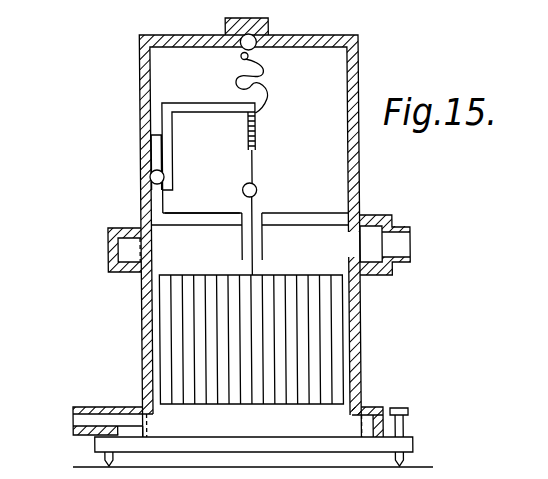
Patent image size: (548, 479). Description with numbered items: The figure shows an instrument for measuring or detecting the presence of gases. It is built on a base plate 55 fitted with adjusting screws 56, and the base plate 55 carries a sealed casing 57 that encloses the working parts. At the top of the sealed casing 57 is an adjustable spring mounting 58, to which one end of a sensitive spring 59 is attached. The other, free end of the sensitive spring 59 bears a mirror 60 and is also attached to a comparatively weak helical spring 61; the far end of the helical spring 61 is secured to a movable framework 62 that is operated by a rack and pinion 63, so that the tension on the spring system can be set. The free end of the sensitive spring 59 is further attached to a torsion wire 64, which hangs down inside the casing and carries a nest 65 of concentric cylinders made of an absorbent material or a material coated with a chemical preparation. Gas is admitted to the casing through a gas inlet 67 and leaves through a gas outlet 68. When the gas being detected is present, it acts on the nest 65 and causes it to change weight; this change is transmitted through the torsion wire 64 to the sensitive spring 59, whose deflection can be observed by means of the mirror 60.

The base plate 55 is at (410, 445).
The adjusting screws 56 is at (390, 407).
The sealed casing 57 is at (360, 168).
The adjustable spring mounting 58 is at (243, 39).
The sensitive spring 59 is at (264, 70).
The mirror 60 is at (255, 191).
The helical spring 61 is at (246, 134).
The movable framework 62 is at (161, 112).
The rack and pinion 63 is at (155, 178).
The torsion wire 64 is at (257, 212).
The nest of concentric cylinders 65 is at (301, 352).
The gas inlet 67 is at (76, 421).
The gas outlet 68 is at (410, 245).